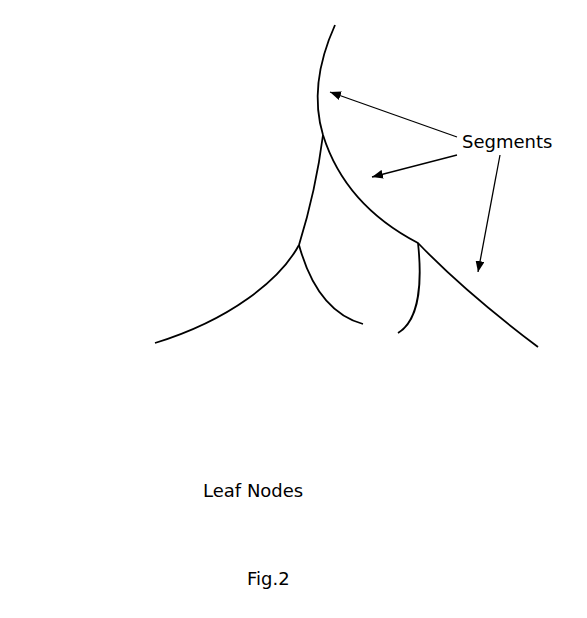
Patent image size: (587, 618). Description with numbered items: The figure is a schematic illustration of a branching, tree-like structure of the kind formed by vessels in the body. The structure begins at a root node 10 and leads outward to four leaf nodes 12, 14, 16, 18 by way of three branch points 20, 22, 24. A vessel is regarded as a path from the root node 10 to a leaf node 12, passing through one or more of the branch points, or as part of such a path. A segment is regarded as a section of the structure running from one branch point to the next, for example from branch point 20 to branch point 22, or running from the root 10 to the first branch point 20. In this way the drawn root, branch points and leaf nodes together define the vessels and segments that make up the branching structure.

The root node 10 is at (317, 38).
The leaf node 12 is at (158, 350).
The leaf node 14 is at (362, 338).
The leaf node 16 is at (393, 350).
The leaf node 18 is at (532, 360).
The branch point 20 is at (307, 135).
The branch point 22 is at (292, 240).
The branch point 24 is at (419, 242).